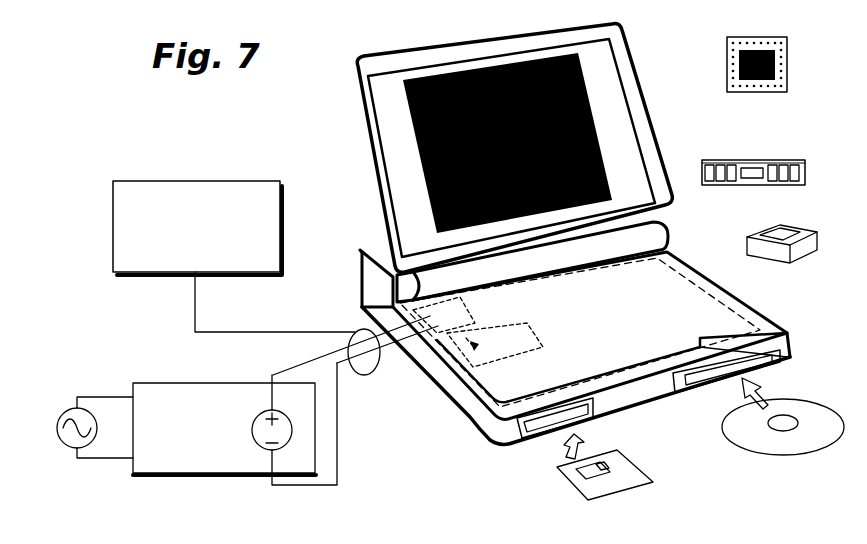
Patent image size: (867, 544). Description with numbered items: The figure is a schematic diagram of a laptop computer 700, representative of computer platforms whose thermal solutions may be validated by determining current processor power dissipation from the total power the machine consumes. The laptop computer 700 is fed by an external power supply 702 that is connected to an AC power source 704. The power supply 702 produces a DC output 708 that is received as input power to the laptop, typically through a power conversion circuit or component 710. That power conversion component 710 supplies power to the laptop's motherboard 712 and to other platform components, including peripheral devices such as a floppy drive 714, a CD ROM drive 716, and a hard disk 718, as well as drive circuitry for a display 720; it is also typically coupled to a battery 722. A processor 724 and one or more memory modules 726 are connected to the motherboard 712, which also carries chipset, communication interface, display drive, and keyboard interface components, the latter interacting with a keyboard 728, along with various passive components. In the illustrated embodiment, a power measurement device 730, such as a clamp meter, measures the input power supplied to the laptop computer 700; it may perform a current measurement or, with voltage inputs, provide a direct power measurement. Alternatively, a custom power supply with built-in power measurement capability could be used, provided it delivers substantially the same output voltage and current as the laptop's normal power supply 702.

The laptop computer 700 is at (575, 262).
The power supply 702 is at (212, 466).
The AC power source 704 is at (72, 445).
The DC output 708 is at (264, 410).
The power conversion circuit or component 710 is at (434, 310).
The motherboard 712 is at (495, 295).
The floppy drive 714 is at (520, 441).
The CD ROM drive 716 is at (790, 360).
The hard disk 718 is at (783, 262).
The display 720 is at (617, 98).
The battery 722 is at (433, 378).
The processor 724 is at (789, 80).
The memory module 726 is at (731, 161).
The keyboard 728 is at (702, 292).
The power measurement device 730 is at (134, 193).